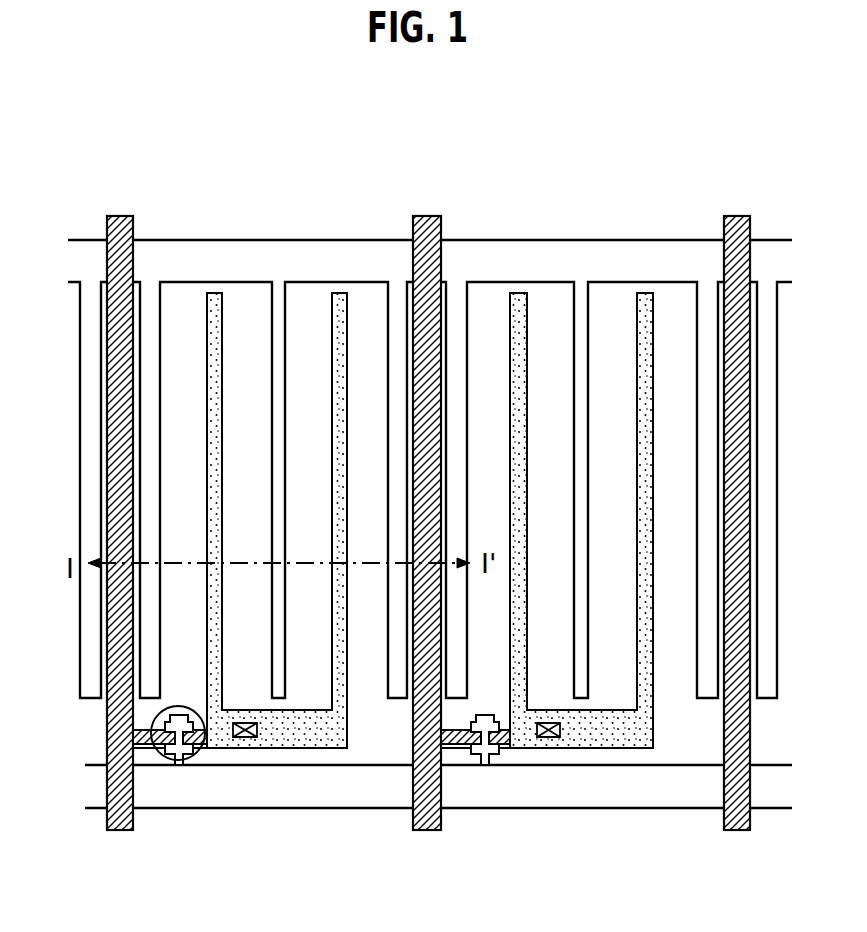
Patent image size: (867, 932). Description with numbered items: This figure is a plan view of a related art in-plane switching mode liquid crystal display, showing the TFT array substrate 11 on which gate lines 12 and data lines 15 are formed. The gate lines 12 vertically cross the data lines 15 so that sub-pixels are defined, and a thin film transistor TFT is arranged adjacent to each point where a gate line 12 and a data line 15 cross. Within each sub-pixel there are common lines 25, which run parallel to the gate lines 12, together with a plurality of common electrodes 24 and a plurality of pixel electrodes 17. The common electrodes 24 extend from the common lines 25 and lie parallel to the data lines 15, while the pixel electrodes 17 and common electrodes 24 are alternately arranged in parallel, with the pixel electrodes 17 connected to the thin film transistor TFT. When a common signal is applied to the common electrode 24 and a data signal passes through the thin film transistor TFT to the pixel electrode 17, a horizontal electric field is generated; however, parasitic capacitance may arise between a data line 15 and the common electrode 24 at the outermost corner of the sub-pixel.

The TFT array substrate 11 is at (571, 147).
The gate line 12 is at (327, 787).
The data line 15 is at (120, 505).
The pixel electrode 17 is at (210, 448).
The common electrode 24 is at (275, 400).
The common line 25 is at (181, 262).
The thin film transistor TFT is at (182, 763).